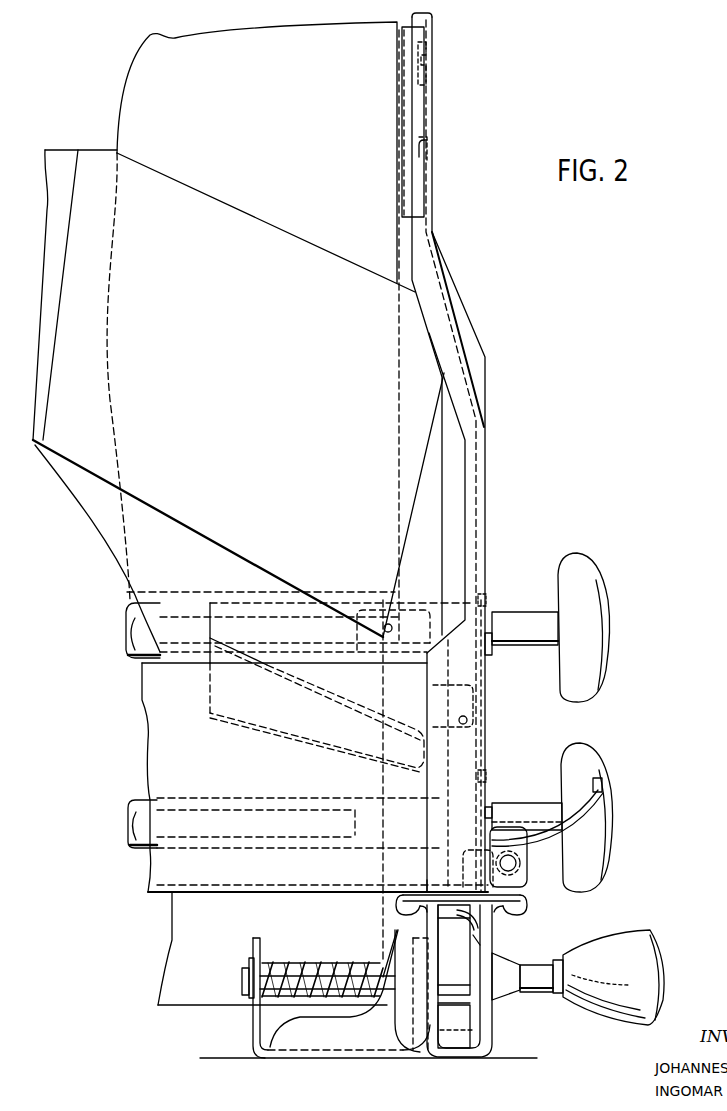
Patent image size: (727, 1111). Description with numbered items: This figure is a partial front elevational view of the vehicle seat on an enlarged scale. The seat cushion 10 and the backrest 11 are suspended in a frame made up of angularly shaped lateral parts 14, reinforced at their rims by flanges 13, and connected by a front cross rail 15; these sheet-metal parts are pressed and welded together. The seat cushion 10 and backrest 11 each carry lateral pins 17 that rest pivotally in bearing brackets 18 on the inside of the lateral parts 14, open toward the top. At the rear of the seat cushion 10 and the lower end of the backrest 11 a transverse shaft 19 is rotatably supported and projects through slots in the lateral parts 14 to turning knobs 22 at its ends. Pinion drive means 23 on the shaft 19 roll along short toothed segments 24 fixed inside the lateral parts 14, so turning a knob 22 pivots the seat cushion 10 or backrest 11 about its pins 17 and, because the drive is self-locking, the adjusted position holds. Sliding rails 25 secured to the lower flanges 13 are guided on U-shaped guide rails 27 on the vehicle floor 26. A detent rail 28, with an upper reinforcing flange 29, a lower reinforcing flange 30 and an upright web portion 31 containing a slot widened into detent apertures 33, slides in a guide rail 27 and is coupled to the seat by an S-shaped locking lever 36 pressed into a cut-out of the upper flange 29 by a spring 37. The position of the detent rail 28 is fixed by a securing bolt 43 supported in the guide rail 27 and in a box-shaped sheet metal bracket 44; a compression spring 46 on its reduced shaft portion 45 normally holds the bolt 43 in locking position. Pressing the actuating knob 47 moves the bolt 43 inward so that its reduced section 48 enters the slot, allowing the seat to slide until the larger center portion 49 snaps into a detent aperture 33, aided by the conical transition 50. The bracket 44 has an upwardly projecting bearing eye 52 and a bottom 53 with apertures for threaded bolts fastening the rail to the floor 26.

The seat cushion 10 is at (243, 345).
The backrest 11 is at (298, 143).
The flanges 13 is at (428, 878).
The lateral parts 14 is at (485, 472).
The cross rail 15 is at (150, 752).
The lateral pins 17 is at (433, 88).
The bearing brackets 18 is at (433, 152).
The transverse shaft 19 is at (138, 656).
The turning knobs 22 is at (600, 597).
The pinion drive means 23 is at (490, 655).
The toothed segments 24 is at (482, 598).
The sliding rails 25 is at (508, 893).
The vehicle floor 26 is at (525, 1057).
The guide rails 27 is at (493, 1008).
The detent rail 28 is at (476, 1030).
The upper reinforcing flange 29 is at (482, 922).
The lower reinforcing flange 30 is at (456, 1047).
The upright web portion 31 is at (480, 942).
The detent apertures 33 is at (454, 1026).
The locking lever 36 is at (600, 787).
The spring 37 is at (527, 855).
The securing bolt 43 is at (412, 1008).
The box-shaped sheet metal bracket 44 is at (253, 1027).
The reduced shaft portion 45 is at (318, 970).
The compression spring 46 is at (368, 963).
The actuating knob 47 is at (636, 980).
The reduced section 48 is at (555, 975).
The larger center portion 49 is at (462, 976).
The conical transition 50 is at (512, 968).
The bearing eye 52 is at (248, 970).
The bottom 53 is at (312, 1055).